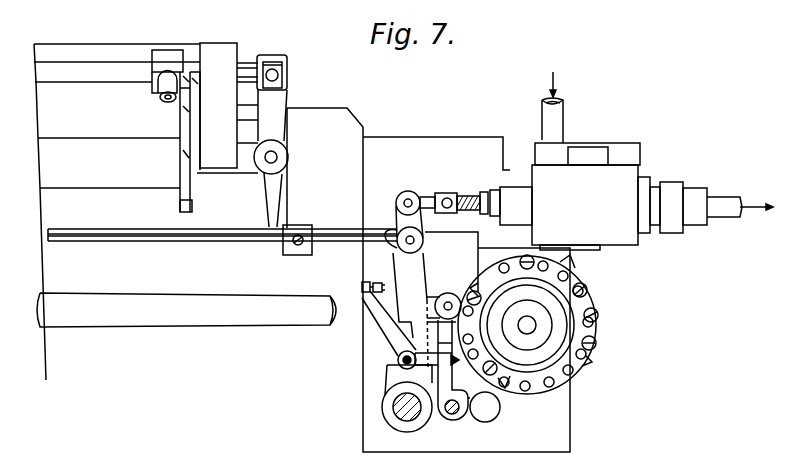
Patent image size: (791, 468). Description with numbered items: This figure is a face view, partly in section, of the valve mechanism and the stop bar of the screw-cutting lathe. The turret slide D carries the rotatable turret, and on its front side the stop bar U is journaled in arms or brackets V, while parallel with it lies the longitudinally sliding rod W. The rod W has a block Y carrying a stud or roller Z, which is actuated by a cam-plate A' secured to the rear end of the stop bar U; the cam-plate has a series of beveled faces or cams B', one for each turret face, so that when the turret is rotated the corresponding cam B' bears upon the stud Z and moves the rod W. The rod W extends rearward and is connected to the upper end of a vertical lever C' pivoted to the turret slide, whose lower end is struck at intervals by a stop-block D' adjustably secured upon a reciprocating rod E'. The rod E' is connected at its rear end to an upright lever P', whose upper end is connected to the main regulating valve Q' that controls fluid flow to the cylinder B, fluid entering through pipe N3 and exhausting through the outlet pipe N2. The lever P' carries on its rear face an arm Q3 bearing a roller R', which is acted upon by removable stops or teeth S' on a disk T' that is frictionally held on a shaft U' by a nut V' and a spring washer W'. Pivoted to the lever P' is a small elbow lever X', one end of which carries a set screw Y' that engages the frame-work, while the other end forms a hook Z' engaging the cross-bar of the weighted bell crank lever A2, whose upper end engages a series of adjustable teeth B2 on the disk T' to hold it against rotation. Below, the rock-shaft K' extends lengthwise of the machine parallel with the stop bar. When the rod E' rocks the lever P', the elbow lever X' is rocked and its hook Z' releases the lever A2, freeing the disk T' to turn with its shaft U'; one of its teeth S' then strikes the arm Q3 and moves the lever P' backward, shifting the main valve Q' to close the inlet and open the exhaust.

The turret slide D is at (117, 51).
The stop bar U is at (107, 231).
The block Y is at (167, 44).
The stud or roller Z is at (141, 93).
The beveled faces or cams B' is at (166, 142).
The cam-plate A' is at (154, 205).
The arms or brackets V is at (227, 108).
The longitudinally sliding rod W is at (250, 50).
The vertical lever C' is at (286, 141).
The cylinder B is at (428, 280).
The rod E' is at (222, 222).
The stop-block D' is at (299, 224).
The rock-shaft K' is at (186, 298).
The arm Q3 is at (429, 295).
The main regulating valve Q' is at (476, 196).
The pipe N3 is at (587, 118).
The outlet pipe N2 is at (652, 207).
The upright lever P' is at (407, 342).
The roller R' is at (447, 289).
The set screw Y' is at (349, 277).
The elbow lever X' is at (368, 330).
The hook Z' is at (444, 370).
The weighted bell crank lever A2 is at (462, 439).
The disk T' is at (535, 335).
The spring washer W' is at (554, 327).
The shaft U' is at (529, 329).
The nut V' is at (514, 321).
The stops or teeth S' is at (551, 315).
The adjustable stops or teeth B2 is at (569, 262).